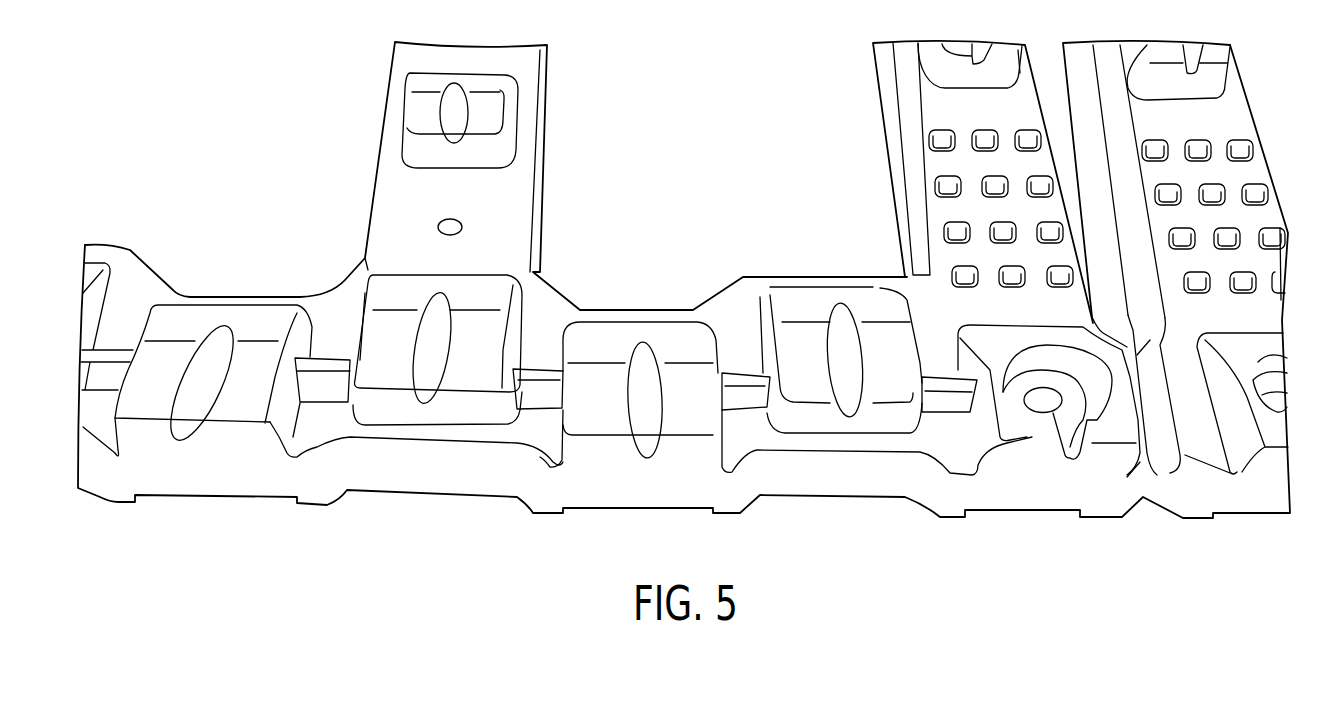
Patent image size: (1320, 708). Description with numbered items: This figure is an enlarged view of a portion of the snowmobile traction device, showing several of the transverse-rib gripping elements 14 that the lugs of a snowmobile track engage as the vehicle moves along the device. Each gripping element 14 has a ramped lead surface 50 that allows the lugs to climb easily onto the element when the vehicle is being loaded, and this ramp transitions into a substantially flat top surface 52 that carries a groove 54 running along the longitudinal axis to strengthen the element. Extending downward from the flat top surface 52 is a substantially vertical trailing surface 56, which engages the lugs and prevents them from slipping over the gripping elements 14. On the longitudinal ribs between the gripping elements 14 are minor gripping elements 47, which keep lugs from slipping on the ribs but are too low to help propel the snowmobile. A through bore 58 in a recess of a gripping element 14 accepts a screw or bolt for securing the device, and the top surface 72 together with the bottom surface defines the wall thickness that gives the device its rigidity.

The gripping element 14 is at (238, 417).
The minor gripping element 47 is at (948, 232).
The ramped lead surface 50 is at (412, 288).
The substantially flat top surface 52 is at (390, 337).
The groove 54 is at (645, 433).
The substantially vertical trailing surface 56 is at (393, 407).
The through bore 58 is at (1043, 405).
The top surface 72 is at (490, 220).